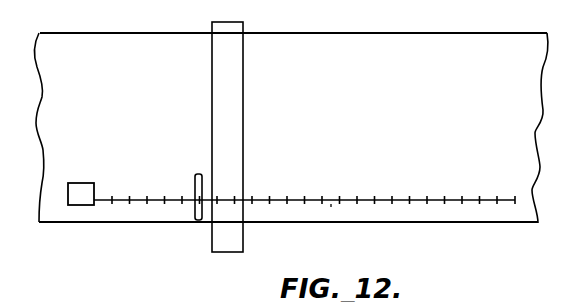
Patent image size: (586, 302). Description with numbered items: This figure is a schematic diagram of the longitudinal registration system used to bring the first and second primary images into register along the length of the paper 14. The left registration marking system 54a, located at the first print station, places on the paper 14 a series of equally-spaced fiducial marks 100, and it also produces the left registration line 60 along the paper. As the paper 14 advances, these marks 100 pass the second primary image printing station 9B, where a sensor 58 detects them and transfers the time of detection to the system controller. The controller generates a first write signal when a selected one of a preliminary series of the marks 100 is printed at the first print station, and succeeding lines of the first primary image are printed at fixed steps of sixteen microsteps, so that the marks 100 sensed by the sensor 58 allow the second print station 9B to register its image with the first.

The paper 14 is at (522, 33).
The second primary image printing station 9B is at (243, 138).
The sensor 58 is at (196, 220).
The left registration marking system 54a is at (83, 205).
The fiducial marks 100 is at (323, 197).
The left registration line 60 is at (331, 207).